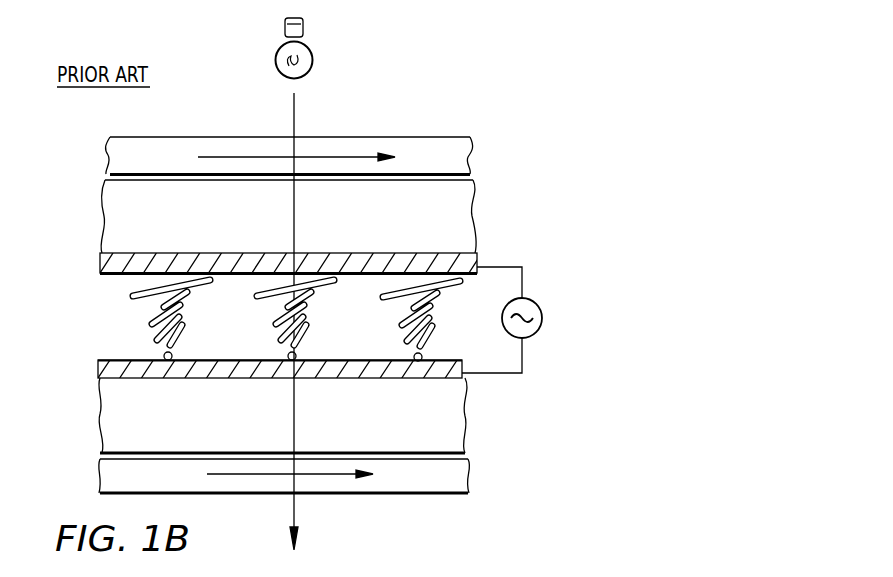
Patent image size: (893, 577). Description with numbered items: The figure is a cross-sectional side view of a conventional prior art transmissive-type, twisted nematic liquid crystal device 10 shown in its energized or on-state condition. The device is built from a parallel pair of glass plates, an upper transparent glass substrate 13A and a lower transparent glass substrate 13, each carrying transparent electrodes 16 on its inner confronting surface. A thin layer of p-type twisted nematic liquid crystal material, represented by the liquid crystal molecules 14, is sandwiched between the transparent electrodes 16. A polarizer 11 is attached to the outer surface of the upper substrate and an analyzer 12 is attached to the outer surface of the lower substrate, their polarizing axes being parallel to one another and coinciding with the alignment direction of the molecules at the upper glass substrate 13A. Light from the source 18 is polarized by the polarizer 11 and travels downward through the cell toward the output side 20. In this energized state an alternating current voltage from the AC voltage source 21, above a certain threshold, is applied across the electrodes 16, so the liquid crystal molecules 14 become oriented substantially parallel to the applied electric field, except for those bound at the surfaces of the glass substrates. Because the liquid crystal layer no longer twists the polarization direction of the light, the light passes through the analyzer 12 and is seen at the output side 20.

The twisted nematic liquid crystal device 10 is at (420, 115).
The polarizer 11 is at (470, 160).
The analyzer 12 is at (460, 480).
The lower transparent glass substrate 13 is at (455, 425).
The upper transparent glass substrate 13A is at (460, 213).
The liquid crystal molecules 14 is at (432, 297).
The transparent electrodes 16 is at (480, 255).
The light source 18 is at (313, 47).
The output side 20 is at (428, 495).
The AC voltage source 21 is at (533, 303).